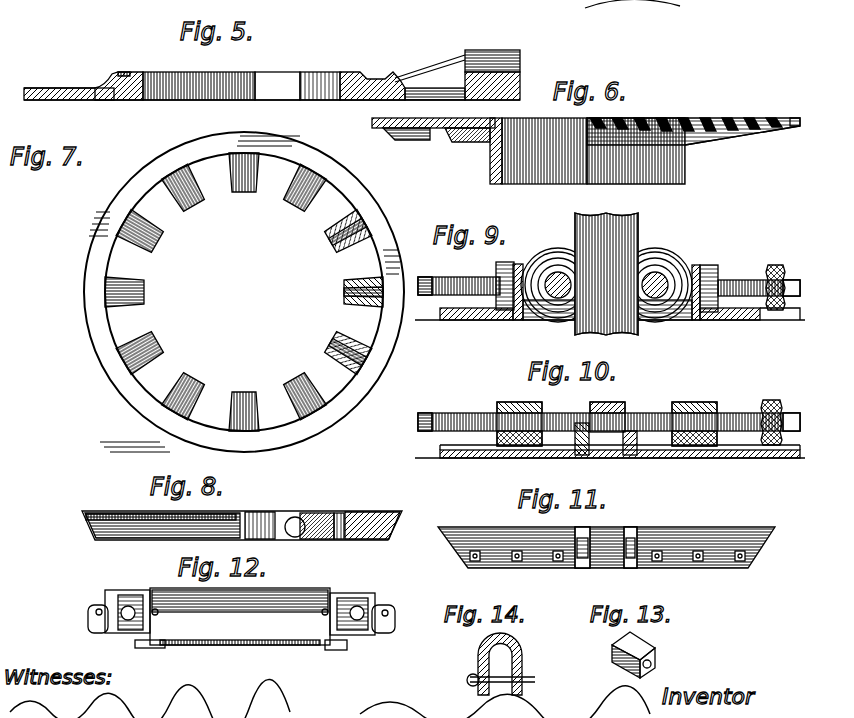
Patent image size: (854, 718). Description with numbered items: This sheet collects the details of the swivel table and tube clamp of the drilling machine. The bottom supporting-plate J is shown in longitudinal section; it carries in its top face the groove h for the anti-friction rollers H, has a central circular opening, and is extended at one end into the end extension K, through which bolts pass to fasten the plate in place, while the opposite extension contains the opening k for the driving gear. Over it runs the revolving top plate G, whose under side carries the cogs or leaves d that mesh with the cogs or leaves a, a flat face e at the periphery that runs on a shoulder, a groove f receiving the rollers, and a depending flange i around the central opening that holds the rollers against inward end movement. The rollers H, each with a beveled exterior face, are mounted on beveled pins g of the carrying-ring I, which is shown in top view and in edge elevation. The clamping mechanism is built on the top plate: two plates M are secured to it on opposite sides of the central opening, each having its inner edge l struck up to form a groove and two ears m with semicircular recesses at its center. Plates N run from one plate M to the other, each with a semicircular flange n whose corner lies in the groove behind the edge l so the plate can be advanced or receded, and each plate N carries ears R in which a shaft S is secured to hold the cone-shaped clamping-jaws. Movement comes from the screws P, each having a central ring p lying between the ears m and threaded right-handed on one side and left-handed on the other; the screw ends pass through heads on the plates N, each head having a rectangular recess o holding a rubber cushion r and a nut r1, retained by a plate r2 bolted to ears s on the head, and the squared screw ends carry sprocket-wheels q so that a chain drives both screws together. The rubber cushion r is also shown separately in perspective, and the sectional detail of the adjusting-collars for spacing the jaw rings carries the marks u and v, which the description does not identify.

In FIG. 5, the end extension K is at (90, 88).
In FIG. 5, the groove h is at (118, 72).
In FIG. 5, the bottom supporting-plate J is at (241, 72).
In FIG. 5, the opening k is at (440, 102).
In FIG. 5, the carrying-ring I is at (492, 62).
In FIG. 7, the carrying-ring I is at (244, 292).
In FIG. 9, the carrying-ring I is at (548, 262).
In FIG. 8, the carrying-ring I is at (82, 518).
In FIG. 6, the flat face e is at (378, 128).
In FIG. 6, the cogs or leaves d is at (412, 140).
In FIG. 6, the groove f is at (472, 142).
In FIG. 13, the groove f is at (644, 644).
In FIG. 6, the depending flange i is at (686, 182).
In FIG. 6, the revolving top plate G is at (693, 119).
In FIG. 6, the cogs or leaves a is at (742, 146).
In FIG. 7, the beveled pins g is at (224, 292).
In FIG. 8, the beveled pins g is at (305, 514).
In FIG. 7, the anti-friction rollers H is at (333, 292).
In FIG. 9, the screws P is at (448, 277).
In FIG. 10, the screws P is at (748, 398).
In FIG. 9, the plate r2 is at (496, 270).
In FIG. 10, the plate r2 is at (722, 412).
In FIG. 9, the ears R is at (515, 264).
In FIG. 9, the shaft S is at (486, 320).
In FIG. 14, the shaft S is at (478, 660).
In FIG. 9, the plates N is at (540, 270).
In FIG. 12, the plates N is at (215, 618).
In FIG. 9, the sprocket-wheels q is at (780, 265).
In FIG. 10, the sprocket-wheels q is at (778, 402).
In FIG. 9, the inner edge l is at (780, 309).
In FIG. 10, the inner edge l is at (440, 446).
In FIG. 11, the inner edge l is at (702, 536).
In FIG. 10, the rubber cushion r is at (494, 406).
In FIG. 10, the nut r1 is at (508, 402).
In FIG. 10, the ring p is at (606, 402).
In FIG. 10, the plates M is at (478, 458).
In FIG. 11, the plates M is at (607, 536).
In FIG. 10, the ears m is at (614, 455).
In FIG. 11, the ears m is at (583, 527).
In FIG. 12, the rectangular recess o is at (105, 600).
In FIG. 12, the ears s is at (95, 616).
In FIG. 12, the semicircular flange n is at (135, 645).
In FIG. 14, the pin u is at (493, 683).
In FIG. 14, the leg v is at (541, 651).